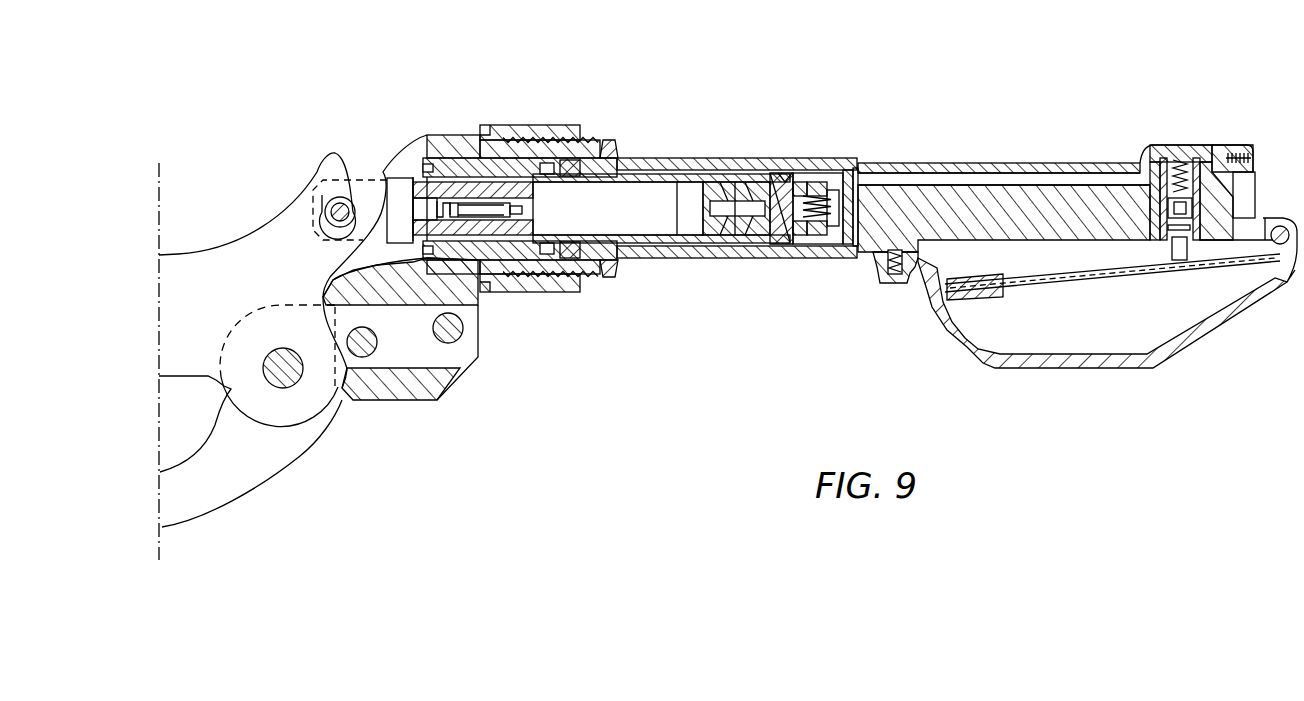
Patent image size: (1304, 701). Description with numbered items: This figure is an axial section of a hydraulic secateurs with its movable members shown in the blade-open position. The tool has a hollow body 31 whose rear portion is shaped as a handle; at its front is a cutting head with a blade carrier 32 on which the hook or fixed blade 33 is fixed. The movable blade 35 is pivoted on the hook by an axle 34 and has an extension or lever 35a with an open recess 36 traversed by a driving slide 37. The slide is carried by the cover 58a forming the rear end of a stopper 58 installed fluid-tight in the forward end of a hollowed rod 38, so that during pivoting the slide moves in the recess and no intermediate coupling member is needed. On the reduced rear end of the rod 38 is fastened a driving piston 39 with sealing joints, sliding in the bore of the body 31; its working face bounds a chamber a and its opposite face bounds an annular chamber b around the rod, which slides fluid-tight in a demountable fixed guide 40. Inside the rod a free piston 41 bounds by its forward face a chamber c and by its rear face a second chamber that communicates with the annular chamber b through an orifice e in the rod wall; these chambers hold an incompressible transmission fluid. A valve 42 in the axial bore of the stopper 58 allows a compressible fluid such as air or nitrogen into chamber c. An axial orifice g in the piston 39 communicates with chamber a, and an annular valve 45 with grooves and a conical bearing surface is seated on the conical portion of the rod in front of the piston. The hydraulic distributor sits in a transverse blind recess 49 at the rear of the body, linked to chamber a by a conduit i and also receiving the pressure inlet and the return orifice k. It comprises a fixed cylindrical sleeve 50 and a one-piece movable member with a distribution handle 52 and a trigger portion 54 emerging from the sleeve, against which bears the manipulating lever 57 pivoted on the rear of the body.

The hollow body 31 is at (796, 252).
The blade carrier 32 is at (508, 168).
The hook or fixed blade 33 is at (257, 465).
The axle 34 is at (289, 381).
The movable blade 35 is at (256, 253).
The extension or lever 35a is at (323, 188).
The open recess 36 is at (400, 190).
The driving slide 37 is at (357, 193).
The hollowed rod 38 is at (572, 158).
The driving piston 39 is at (850, 173).
The fixed guide 40 is at (605, 140).
The free piston 41 is at (725, 195).
The valve 42 is at (490, 212).
The annular valve 45 is at (800, 197).
The transverse blind recess 49 is at (1150, 206).
The cylindrical sleeve 50 is at (1197, 185).
The distribution handle 52 is at (1173, 193).
The trigger portion or pusher element 54 is at (1180, 250).
The manipulating lever 57 is at (983, 288).
The stopper 58 is at (458, 222).
The cover 58a is at (468, 117).
The chamber a is at (858, 190).
The annular chamber b is at (678, 180).
The chamber c is at (614, 203).
The orifice e is at (778, 193).
The axial orifice g is at (1207, 202).
The conduit i is at (930, 183).
The return orifice k is at (1227, 177).